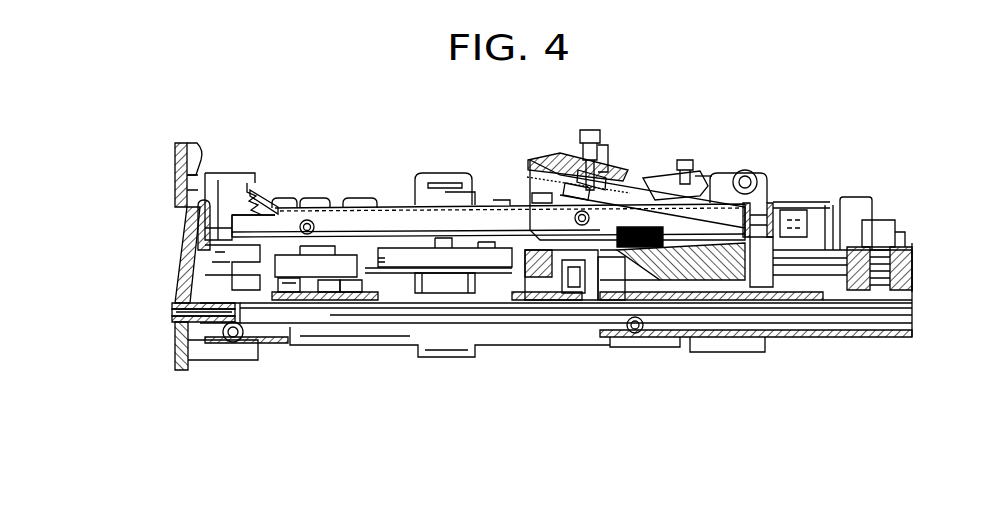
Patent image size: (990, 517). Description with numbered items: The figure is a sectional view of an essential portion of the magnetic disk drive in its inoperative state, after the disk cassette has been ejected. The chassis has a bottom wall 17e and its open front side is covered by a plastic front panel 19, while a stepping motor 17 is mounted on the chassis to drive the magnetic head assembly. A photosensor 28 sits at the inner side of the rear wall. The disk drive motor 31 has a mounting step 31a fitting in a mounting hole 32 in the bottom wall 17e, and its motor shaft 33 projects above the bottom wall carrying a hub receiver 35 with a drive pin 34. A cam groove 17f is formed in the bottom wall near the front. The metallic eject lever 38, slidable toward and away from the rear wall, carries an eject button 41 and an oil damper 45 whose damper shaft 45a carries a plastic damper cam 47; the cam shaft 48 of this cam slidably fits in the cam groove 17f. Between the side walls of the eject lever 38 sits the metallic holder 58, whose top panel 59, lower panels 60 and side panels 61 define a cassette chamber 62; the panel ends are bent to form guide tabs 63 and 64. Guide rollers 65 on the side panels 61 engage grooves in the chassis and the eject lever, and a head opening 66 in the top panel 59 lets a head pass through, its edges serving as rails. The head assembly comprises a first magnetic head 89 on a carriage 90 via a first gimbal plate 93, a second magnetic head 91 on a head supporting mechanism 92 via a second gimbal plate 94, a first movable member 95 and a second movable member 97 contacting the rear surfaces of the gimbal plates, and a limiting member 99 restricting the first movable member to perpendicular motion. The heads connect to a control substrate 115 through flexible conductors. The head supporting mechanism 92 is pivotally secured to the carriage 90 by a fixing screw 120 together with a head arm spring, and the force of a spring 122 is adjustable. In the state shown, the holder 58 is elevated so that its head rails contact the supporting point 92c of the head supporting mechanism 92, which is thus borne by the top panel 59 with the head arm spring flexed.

The stepping motor 17 is at (858, 205).
The bottom wall 17e is at (793, 338).
The cam groove 17f is at (310, 347).
The front panel 19 is at (175, 350).
The photosensor 28 is at (895, 222).
The disk drive motor 31 is at (490, 325).
The base plate portion 31a is at (450, 317).
The mounting hole 32 is at (383, 301).
The motor shaft 33 is at (442, 248).
The drive pin 34 is at (475, 205).
The hub receiver 35 is at (375, 215).
The eject lever 38 is at (432, 297).
The eject button 41 is at (172, 310).
The oil damper 45 is at (350, 255).
The damper shaft 45a is at (328, 296).
The damper cam 47 is at (350, 296).
The cam shaft 48 is at (290, 296).
The holder 58 is at (337, 207).
The top panel 59 is at (397, 208).
The lower panels 60 is at (428, 205).
The side panels 61 is at (640, 205).
The cassette chamber 62 is at (247, 190).
The guide tab 63 is at (252, 190).
The guide tab 64 is at (180, 250).
The guide rollers 65 is at (309, 221).
The head opening 66 is at (560, 218).
The first magnetic head 89 is at (574, 295).
The carriage 90 is at (692, 282).
The second magnetic head 91 is at (535, 175).
The head supporting mechanism 92 is at (567, 160).
The supporting point 92c is at (665, 178).
The first gimbal plate 93 is at (540, 300).
The second gimbal plate 94 is at (560, 153).
The first movable member 95 is at (606, 300).
The second movable member 97 is at (590, 130).
The limiting member 99 is at (545, 240).
The control substrate 115 is at (866, 338).
The fixing screw 120 is at (758, 195).
The spring 122 is at (694, 170).